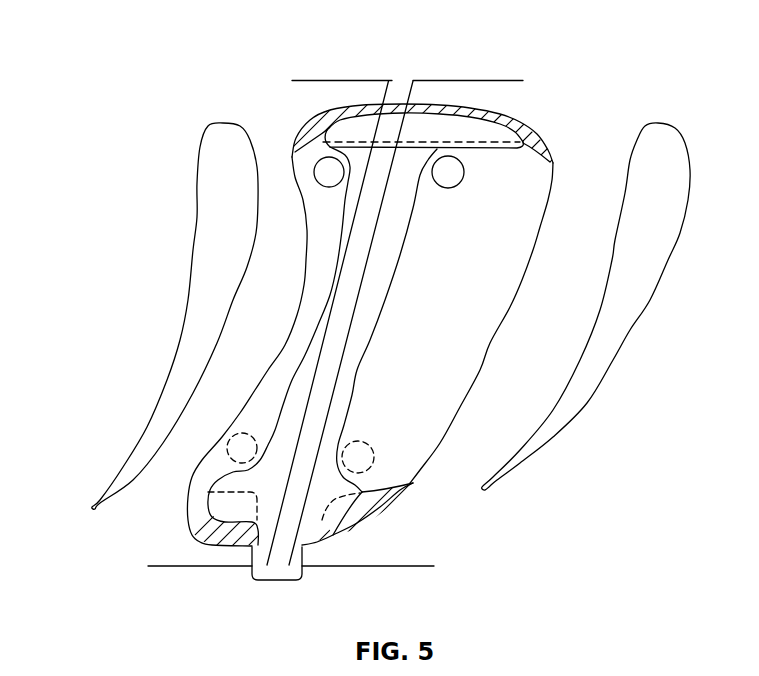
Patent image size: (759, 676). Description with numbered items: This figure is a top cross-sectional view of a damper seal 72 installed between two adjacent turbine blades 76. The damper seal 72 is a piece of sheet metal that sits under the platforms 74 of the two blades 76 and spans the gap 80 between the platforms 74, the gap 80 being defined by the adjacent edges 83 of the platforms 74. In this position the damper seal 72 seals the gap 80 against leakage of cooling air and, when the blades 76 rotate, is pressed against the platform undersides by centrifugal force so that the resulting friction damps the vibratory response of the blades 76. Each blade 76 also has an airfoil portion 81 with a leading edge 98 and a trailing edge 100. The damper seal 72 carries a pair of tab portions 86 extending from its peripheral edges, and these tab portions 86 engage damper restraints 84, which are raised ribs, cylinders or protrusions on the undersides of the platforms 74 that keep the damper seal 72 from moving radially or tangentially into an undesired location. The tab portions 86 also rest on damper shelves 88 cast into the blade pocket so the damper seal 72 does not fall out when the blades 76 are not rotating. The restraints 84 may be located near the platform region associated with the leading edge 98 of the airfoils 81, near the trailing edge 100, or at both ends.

The damper seal 72 is at (505, 238).
The platform 74 is at (215, 558).
The turbine blade 76 is at (168, 313).
The gap 80 is at (402, 87).
The airfoil portion 81 is at (210, 257).
The adjacent edges of platforms 83 is at (388, 97).
The damper restraint 84 is at (323, 183).
The tab portion 86 is at (342, 132).
The damper shelf 88 is at (367, 115).
The leading edge 98 is at (223, 120).
The trailing edge 100 is at (93, 503).